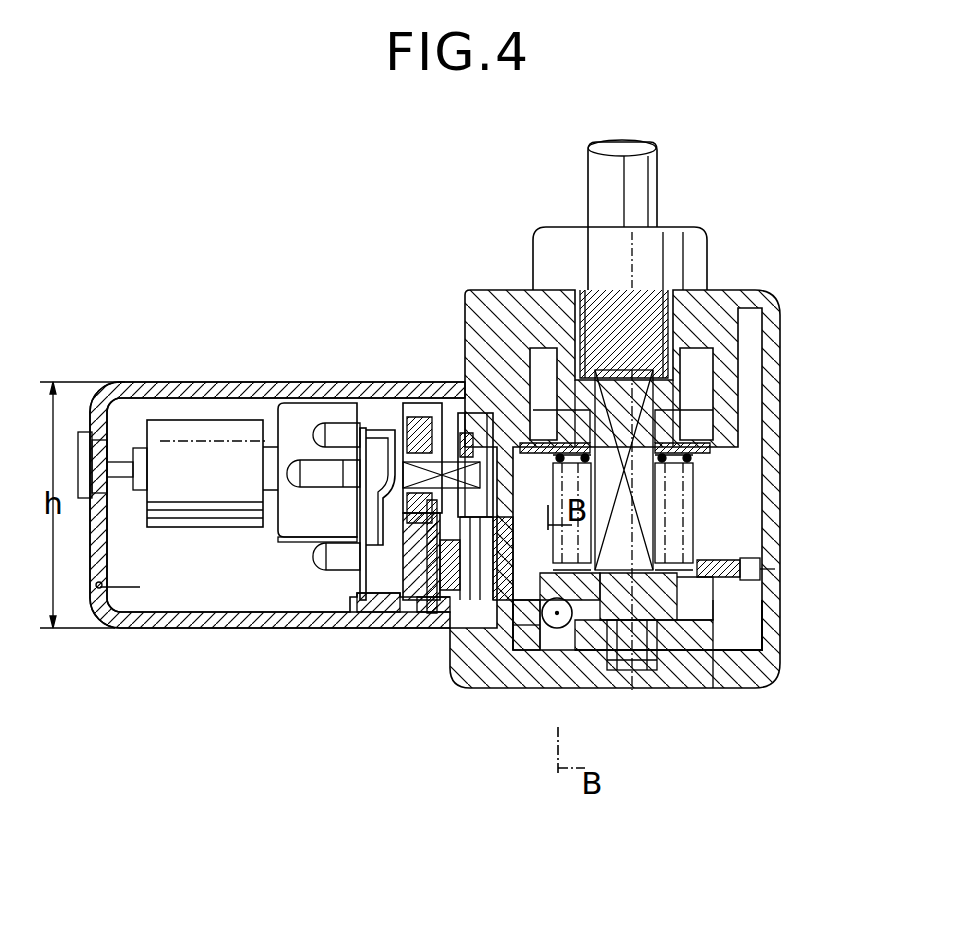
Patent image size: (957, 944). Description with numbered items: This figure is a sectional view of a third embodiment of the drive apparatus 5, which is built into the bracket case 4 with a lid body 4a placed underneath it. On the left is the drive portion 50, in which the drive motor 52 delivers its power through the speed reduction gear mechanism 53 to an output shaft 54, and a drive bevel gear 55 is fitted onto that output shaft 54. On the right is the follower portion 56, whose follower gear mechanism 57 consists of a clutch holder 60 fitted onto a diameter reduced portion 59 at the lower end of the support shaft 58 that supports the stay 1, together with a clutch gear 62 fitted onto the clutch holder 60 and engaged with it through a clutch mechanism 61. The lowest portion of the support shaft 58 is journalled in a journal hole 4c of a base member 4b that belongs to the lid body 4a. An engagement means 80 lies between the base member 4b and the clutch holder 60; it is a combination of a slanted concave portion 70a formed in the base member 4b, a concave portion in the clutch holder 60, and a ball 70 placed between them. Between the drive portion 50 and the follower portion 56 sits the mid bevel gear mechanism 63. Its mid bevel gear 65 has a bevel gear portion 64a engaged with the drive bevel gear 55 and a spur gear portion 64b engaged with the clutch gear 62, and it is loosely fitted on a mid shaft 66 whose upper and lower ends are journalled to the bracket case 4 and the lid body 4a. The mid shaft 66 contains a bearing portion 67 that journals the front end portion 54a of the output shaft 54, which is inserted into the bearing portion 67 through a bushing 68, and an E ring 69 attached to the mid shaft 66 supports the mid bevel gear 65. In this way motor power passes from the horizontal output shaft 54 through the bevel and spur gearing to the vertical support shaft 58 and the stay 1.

The stay 1 is at (645, 185).
The bracket case 4 is at (449, 492).
The lid body 4a is at (772, 636).
The base member 4b is at (680, 628).
The journal hole 4c is at (628, 660).
The drive apparatus 5 is at (152, 332).
The drive portion 50 is at (283, 545).
The drive motor 52 is at (190, 447).
The speed reduction gear mechanism 53 is at (298, 418).
The output shaft 54 is at (395, 475).
The front end portion 54a is at (437, 440).
The drive bevel gear 55 is at (412, 420).
The follower portion 56 is at (701, 493).
The follower gear mechanism 57 is at (686, 512).
The support shaft 58 is at (690, 430).
The diameter reduced portion 59 is at (608, 667).
The clutch holder 60 is at (748, 588).
The clutch mechanism 61 is at (698, 595).
The clutch gear 62 is at (735, 570).
The mid bevel gear mechanism 63 is at (408, 599).
The bevel gear portion 64a is at (462, 593).
The spur gear portion 64b is at (400, 593).
The mid bevel gear 65 is at (481, 635).
The mid shaft 66 is at (418, 593).
The bearing portion 67 is at (476, 480).
The bushing 68 is at (395, 588).
The E ring 69 is at (452, 590).
The ball 70 is at (607, 679).
The slanted concave portion 70a is at (528, 633).
The engagement means 80 is at (548, 628).